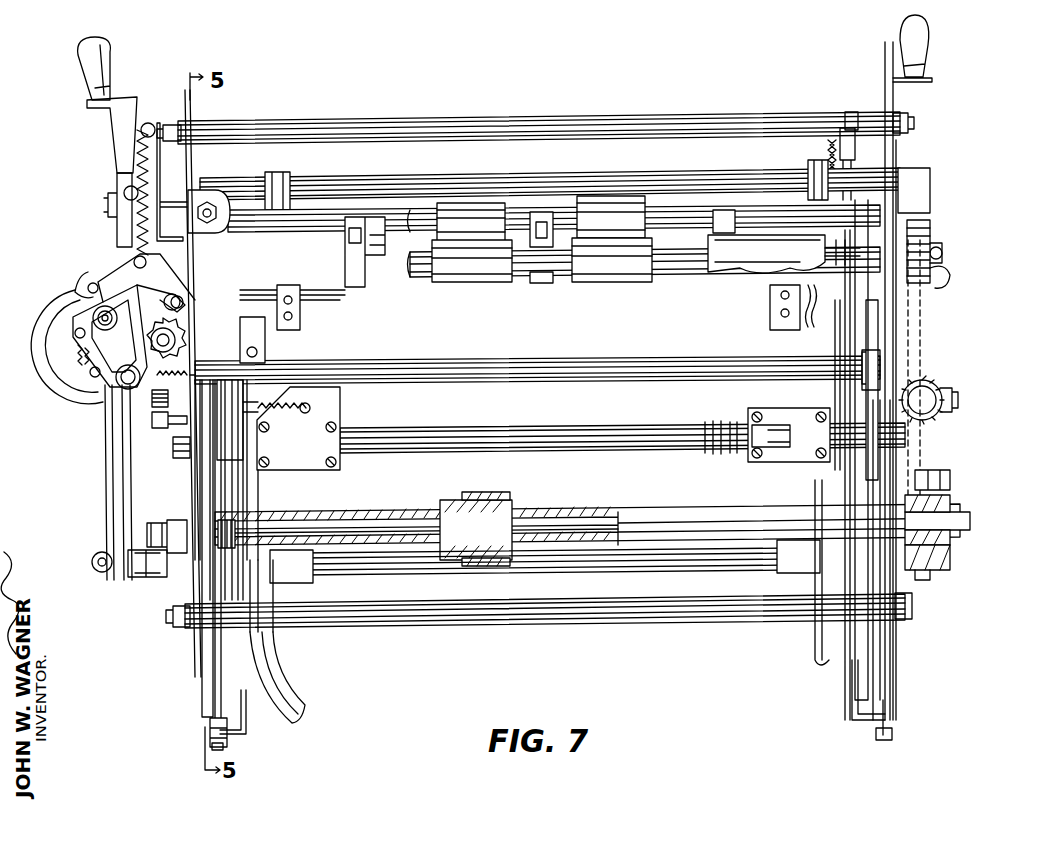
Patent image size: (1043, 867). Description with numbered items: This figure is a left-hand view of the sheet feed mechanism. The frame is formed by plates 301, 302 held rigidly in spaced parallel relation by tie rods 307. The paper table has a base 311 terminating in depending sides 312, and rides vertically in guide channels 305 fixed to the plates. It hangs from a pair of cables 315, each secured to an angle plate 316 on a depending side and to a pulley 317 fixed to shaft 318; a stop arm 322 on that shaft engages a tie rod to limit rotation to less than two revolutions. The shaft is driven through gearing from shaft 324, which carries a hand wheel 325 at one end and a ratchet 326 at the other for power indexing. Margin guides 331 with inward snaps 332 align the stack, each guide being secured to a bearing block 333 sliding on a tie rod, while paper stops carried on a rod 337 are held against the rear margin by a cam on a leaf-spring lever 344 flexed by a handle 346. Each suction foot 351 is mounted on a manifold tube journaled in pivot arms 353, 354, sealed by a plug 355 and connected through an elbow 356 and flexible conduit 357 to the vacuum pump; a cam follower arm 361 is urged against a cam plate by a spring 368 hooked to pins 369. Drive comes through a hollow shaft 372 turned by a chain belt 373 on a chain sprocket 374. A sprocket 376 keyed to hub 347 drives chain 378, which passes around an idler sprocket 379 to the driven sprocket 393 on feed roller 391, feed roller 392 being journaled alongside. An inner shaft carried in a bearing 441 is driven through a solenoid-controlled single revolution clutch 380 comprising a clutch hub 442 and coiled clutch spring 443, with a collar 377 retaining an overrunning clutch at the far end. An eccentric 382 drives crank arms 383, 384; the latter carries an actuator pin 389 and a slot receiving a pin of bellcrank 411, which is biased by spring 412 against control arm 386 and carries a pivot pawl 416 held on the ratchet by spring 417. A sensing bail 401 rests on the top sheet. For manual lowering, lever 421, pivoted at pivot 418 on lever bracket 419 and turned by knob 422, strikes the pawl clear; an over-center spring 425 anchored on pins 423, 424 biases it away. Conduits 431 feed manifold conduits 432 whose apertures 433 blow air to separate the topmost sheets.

The plate 301 is at (896, 657).
The plate 302 is at (194, 648).
The guide channels 305 is at (203, 714).
The tie rods 307 is at (713, 115).
The base 311 is at (628, 572).
The depending sides 312 is at (250, 720).
The cables 315 is at (215, 688).
The angle plate 316 is at (226, 746).
The pulley 317 is at (244, 352).
The shaft 318 is at (578, 385).
The stop arm 322 is at (247, 398).
The shaft 324 is at (172, 337).
The hand wheel 325 is at (62, 340).
The ratchet 326 is at (180, 303).
The margin guides 331 is at (312, 583).
The snaps 332 is at (300, 306).
The bearing block 333 is at (320, 470).
The rod 337 is at (420, 238).
The lever 344 is at (895, 97).
The handle 346 is at (929, 32).
The hub 347 is at (950, 556).
The suction foot 351 is at (368, 288).
The pivot arm 353 is at (292, 163).
The pivot arm 354 is at (812, 168).
The plug 355 is at (585, 252).
The elbow 356 is at (912, 170).
The flexible conduit 357 is at (950, 538).
The cam follower arm 361 is at (856, 113).
The spring 368 is at (828, 156).
The pins 369 is at (848, 130).
The hollow shaft 372 is at (590, 512).
The chain belt 373 is at (474, 492).
The chain sprocket 374 is at (512, 508).
The sprocket 376 is at (950, 481).
The collar 377 is at (952, 510).
The chain 378 is at (922, 320).
The idler sprocket 379 is at (934, 385).
The single revolution clutch 380 is at (247, 515).
The eccentric 382 is at (140, 500).
The crank arm 383 is at (130, 482).
The crank arm 384 is at (88, 272).
The control arm 386 is at (160, 295).
The actuator pin 389 is at (88, 287).
The feed roller 391 is at (600, 285).
The feed roller 392 is at (605, 196).
The driven sprocket 393 is at (934, 240).
The bail 401 is at (826, 250).
The bellcrank 411 is at (85, 320).
The spring 412 is at (156, 420).
The pivot pawl 416 is at (90, 374).
The spring 417 is at (78, 352).
The pivot 418 is at (124, 190).
The lever bracket 419 is at (117, 231).
The lever 421 is at (119, 137).
The knob 422 is at (110, 47).
The pin 423 is at (150, 125).
The pin 424 is at (134, 262).
The spring 425 is at (168, 185).
The conduits 431 is at (280, 680).
The manifold conduits 432 is at (298, 430).
The apertures 433 is at (795, 313).
The bearing 441 is at (172, 558).
The clutch hub 442 is at (200, 512).
The coiled clutch spring 443 is at (232, 547).